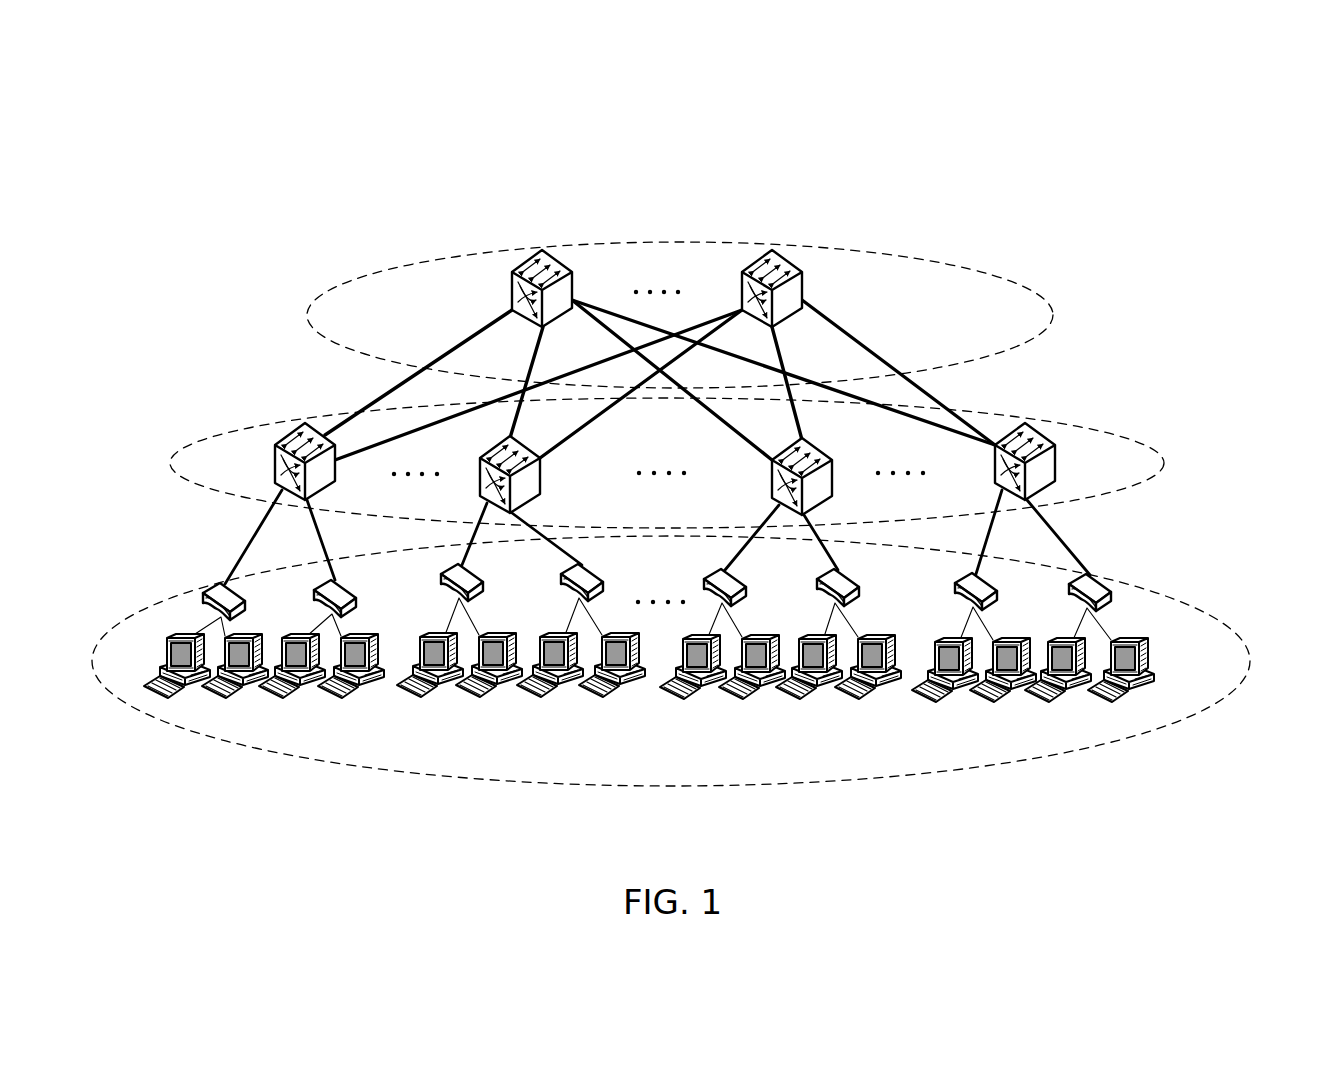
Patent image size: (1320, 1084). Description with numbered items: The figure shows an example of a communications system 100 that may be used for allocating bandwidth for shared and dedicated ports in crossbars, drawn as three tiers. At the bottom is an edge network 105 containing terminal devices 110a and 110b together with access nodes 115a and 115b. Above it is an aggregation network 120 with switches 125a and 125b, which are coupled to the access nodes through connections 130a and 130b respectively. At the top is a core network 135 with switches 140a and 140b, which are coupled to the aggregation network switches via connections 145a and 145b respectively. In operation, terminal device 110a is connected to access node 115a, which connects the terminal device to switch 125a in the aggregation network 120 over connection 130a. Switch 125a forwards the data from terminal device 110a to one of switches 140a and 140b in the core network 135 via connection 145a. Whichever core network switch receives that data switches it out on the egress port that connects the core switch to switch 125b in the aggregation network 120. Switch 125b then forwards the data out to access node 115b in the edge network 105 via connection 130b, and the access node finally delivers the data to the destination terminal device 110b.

The communications system 100 is at (348, 124).
The edge network 105 is at (1245, 657).
The terminal device 110a is at (190, 683).
The terminal device 110b is at (1137, 687).
The access node 115a is at (217, 583).
The access node 115b is at (1090, 580).
The aggregation network 120 is at (1163, 461).
The switch 125a is at (290, 435).
The switch 125b is at (1027, 430).
The connection 130a is at (307, 498).
The connection 130b is at (1007, 495).
The core network 135 is at (1053, 314).
The switch 140a is at (520, 270).
The switch 140b is at (787, 260).
The connection 145a is at (541, 330).
The connection 145b is at (843, 334).